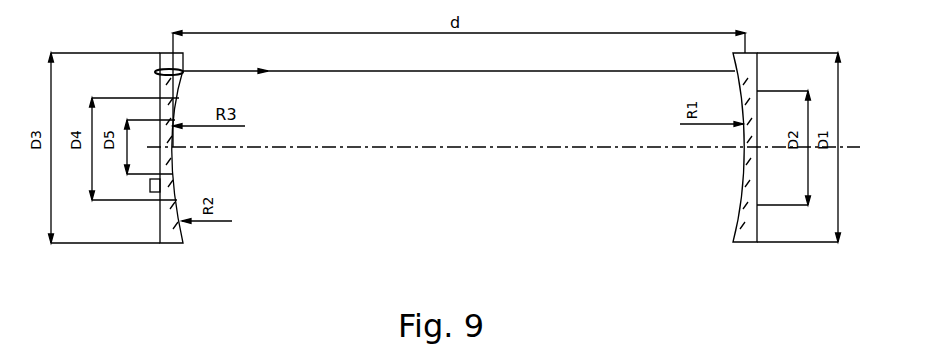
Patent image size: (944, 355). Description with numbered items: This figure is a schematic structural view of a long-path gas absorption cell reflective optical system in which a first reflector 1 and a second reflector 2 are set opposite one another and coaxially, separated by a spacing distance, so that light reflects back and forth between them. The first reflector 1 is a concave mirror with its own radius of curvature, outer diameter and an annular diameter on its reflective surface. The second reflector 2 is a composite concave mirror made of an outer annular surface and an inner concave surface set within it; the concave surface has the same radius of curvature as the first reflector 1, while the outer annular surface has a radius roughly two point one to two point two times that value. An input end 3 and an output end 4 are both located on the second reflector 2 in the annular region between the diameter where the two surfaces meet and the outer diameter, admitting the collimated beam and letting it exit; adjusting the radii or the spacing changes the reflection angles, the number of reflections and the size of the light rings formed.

The first reflector 1 is at (746, 240).
The second reflector 2 is at (169, 224).
The input end 3 is at (163, 67).
The output end 4 is at (152, 192).